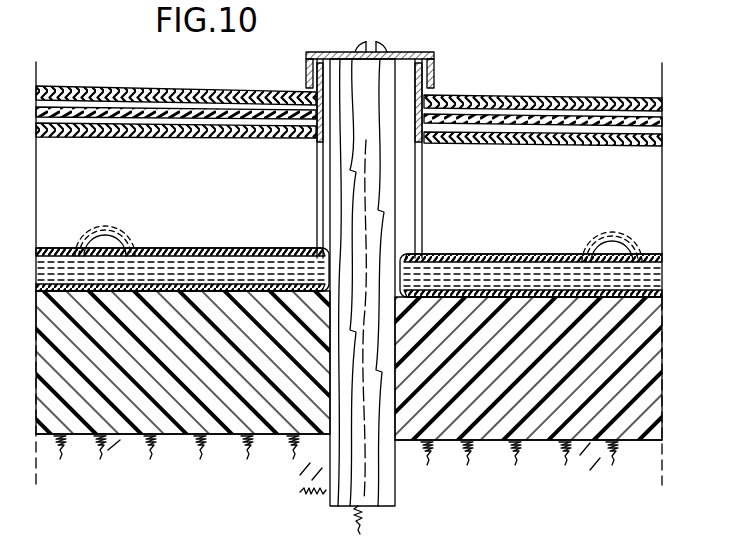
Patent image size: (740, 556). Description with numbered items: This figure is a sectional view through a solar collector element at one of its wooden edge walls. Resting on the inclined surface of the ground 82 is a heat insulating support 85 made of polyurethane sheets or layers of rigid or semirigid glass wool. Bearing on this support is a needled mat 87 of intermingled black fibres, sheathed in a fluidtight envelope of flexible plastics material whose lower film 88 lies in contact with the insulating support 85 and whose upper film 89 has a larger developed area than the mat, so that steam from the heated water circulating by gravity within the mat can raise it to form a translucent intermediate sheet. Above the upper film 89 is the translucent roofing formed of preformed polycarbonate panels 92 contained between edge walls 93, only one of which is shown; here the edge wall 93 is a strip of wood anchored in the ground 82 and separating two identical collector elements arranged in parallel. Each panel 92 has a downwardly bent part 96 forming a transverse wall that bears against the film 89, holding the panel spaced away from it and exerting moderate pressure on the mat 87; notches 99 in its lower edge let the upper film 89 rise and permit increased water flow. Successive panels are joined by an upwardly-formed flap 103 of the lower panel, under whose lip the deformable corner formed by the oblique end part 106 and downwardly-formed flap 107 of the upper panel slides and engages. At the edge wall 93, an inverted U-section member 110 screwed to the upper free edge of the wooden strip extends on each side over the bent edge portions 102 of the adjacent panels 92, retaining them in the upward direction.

The inclined surface / ground 82 is at (539, 437).
The heat insulating support 85 is at (630, 380).
The needled mat 87 is at (232, 289).
The lower film 88 is at (140, 291).
The upper film 89 is at (214, 250).
The panel 92 is at (349, 104).
The edge wall 93 is at (380, 205).
The downwardly bent part / transverse wall 96 is at (375, 195).
The recess or notch 99 is at (102, 242).
The bent edge portion 102 is at (306, 72).
The upwardly-formed flap 103 is at (183, 89).
The oblique end part 106 is at (115, 110).
The downwardly-formed flap 107 is at (172, 126).
The inverted U-section member 110 is at (406, 52).